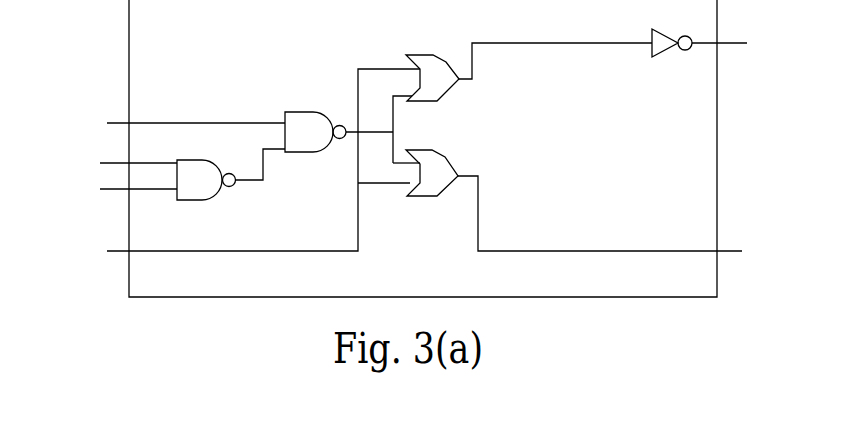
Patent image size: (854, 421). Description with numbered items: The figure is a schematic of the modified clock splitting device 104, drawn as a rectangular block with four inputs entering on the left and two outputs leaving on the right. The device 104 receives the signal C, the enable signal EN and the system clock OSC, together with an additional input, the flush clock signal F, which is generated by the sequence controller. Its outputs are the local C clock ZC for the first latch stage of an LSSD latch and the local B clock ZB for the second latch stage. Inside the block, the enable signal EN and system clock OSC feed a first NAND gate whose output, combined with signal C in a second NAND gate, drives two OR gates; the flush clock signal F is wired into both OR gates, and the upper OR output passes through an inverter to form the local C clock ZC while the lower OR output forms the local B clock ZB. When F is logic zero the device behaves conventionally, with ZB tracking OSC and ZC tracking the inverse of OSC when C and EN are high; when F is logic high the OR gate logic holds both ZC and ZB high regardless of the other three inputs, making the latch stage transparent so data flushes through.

The modified clock splitting device 104 is at (128, 8).
The signal C is at (180, 117).
The enable signal EN is at (119, 165).
The system clock OSC is at (115, 199).
The flush clock signal F is at (247, 166).
The local C clock ZC is at (626, 54).
The local B clock ZB is at (621, 220).